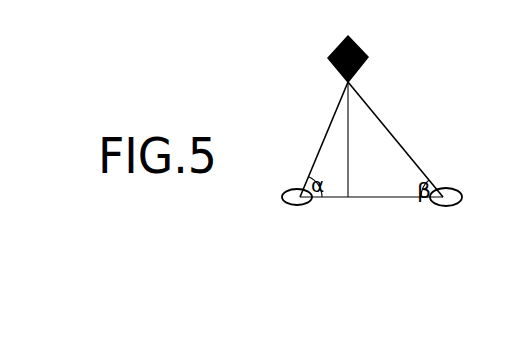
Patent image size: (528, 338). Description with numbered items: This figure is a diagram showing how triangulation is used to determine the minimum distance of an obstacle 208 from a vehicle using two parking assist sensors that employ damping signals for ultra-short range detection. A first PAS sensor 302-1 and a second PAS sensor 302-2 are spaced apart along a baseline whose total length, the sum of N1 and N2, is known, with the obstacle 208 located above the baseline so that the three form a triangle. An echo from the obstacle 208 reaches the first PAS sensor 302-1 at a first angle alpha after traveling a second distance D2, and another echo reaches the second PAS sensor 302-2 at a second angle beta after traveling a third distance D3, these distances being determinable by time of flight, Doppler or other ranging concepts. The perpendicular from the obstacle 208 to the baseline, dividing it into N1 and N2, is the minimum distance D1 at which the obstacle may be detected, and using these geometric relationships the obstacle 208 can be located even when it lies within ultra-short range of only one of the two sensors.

The obstacle 208 is at (363, 48).
The first PAS sensor 302-1 is at (296, 205).
The second PAS sensor 302-2 is at (452, 206).
The minimum distance D1 is at (360, 139).
The second distance D2 is at (317, 139).
The third distance D3 is at (395, 139).
The baseline segment N1 is at (324, 215).
The baseline segment N2 is at (395, 215).